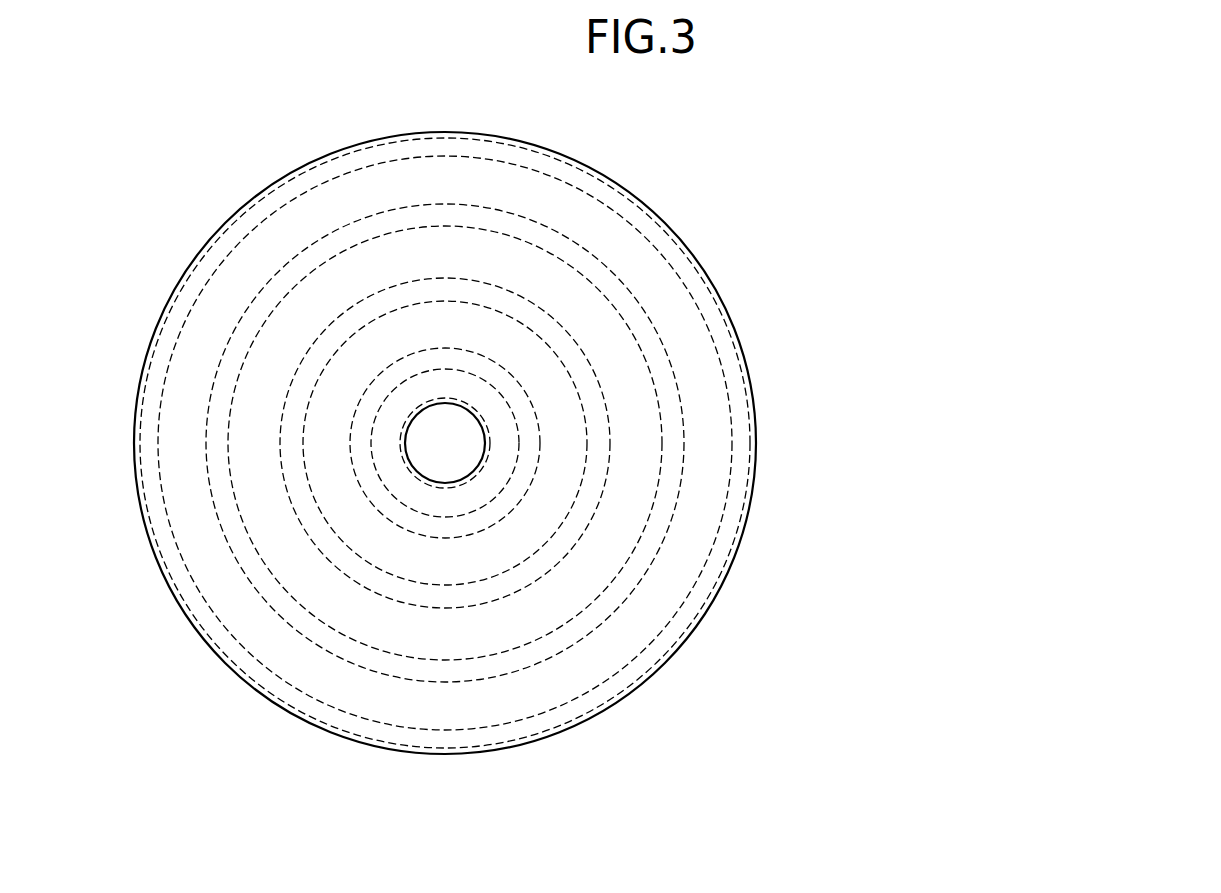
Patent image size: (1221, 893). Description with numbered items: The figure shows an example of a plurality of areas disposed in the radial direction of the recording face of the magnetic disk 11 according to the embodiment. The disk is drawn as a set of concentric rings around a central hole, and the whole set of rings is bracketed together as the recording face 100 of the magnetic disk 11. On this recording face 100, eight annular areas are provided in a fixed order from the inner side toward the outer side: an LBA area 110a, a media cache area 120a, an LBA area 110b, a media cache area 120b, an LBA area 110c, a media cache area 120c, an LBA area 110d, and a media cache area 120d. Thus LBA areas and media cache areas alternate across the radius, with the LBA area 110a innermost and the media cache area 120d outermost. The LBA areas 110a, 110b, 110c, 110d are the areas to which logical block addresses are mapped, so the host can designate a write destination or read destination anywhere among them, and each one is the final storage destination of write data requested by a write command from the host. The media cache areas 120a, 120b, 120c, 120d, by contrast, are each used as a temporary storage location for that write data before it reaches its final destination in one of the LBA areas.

The magnetic disk 11 is at (600, 173).
The recording face 100 is at (1095, 155).
The LBA area 110a is at (483, 405).
The media cache area 120a is at (518, 417).
The LBA area 110b is at (560, 417).
The media cache area 120b is at (592, 433).
The LBA area 110c is at (622, 498).
The media cache area 120c is at (632, 573).
The LBA area 110d is at (632, 620).
The media cache area 120d is at (632, 670).